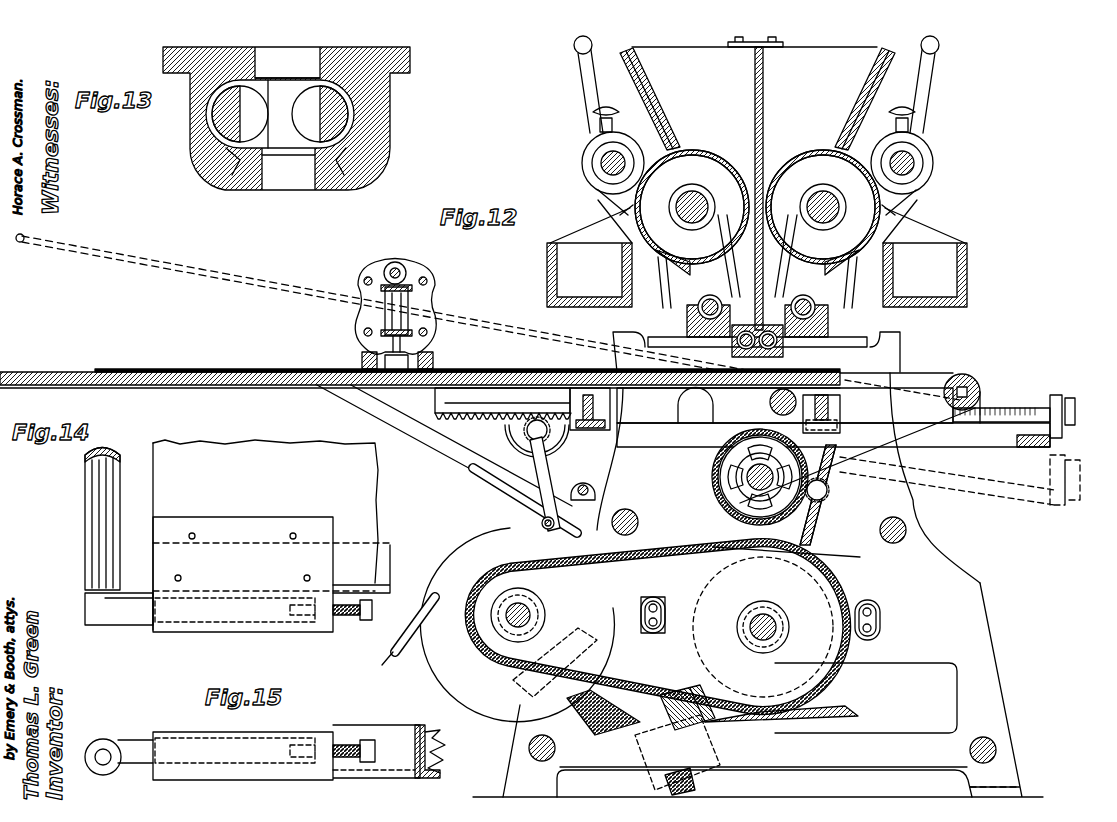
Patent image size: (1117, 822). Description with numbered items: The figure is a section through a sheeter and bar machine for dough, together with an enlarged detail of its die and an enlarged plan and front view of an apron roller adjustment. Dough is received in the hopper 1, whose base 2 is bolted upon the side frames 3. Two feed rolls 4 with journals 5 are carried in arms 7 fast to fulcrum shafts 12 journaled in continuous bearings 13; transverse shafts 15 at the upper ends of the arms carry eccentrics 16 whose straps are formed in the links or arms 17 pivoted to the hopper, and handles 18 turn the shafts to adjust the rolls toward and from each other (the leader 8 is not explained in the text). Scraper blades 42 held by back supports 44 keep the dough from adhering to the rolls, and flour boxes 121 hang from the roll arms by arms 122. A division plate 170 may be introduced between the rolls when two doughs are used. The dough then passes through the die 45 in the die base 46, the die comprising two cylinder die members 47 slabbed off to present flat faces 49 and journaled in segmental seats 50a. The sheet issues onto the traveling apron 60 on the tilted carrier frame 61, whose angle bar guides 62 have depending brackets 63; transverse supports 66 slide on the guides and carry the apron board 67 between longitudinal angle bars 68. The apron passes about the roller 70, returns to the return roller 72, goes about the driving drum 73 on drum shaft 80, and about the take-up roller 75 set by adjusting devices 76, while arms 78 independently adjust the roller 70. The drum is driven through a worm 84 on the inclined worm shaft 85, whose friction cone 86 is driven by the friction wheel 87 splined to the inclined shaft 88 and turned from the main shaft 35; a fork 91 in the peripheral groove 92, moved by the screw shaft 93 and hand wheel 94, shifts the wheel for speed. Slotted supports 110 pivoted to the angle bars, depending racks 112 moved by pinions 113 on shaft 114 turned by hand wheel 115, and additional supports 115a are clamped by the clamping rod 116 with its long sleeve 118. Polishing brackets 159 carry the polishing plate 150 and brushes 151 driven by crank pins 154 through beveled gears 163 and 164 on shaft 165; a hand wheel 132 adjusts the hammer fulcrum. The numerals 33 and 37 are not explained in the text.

In FIG. 12, the hopper 1 is at (694, 47).
In FIG. 12, the hopper base 2 is at (870, 342).
In FIG. 12, the side frames 3 is at (935, 555).
In FIG. 12, the feed rolls 4 is at (712, 170).
In FIG. 12, the journals 5 is at (692, 195).
In FIG. 12, the arms 7 is at (760, 270).
In FIG. 12, the lever arm 8 is at (756, 225).
In FIG. 12, the shafts 12 is at (665, 295).
In FIG. 12, the bearings 13 is at (687, 318).
In FIG. 12, the transverse shafts 15 is at (600, 163).
In FIG. 12, the eccentrics 16 is at (590, 178).
In FIG. 12, the links or arms 17 is at (658, 150).
In FIG. 12, the handles 18 is at (580, 70).
In FIG. 12, the large pulley 33 is at (763, 627).
In FIG. 12, the main shaft 35 is at (533, 614).
In FIG. 12, the toothed belt 37 is at (657, 627).
In FIG. 12, the scraper blades 42 is at (722, 300).
In FIG. 12, the back supports 44 is at (708, 255).
In FIG. 13, the die 45 is at (290, 50).
In FIG. 12, the die 45 is at (735, 343).
In FIG. 13, the die base 46 is at (215, 160).
In FIG. 12, the die base 46 is at (783, 345).
In FIG. 13, the cylinder die members 47 is at (235, 118).
In FIG. 13, the flat faces 49 is at (304, 135).
In FIG. 13, the segmental seats 50a is at (240, 165).
In FIG. 12, the traveling apron 60 is at (308, 388).
In FIG. 12, the tilted carrier frame 61 is at (1050, 440).
In FIG. 12, the angle bar members or guides 62 is at (625, 440).
In FIG. 12, the depending brackets 63 is at (725, 430).
In FIG. 12, the transverse apron board supports 66 is at (636, 420).
In FIG. 14, the apron board 67 is at (212, 455).
In FIG. 15, the apron board 67 is at (432, 745).
In FIG. 12, the apron board 67 is at (250, 292).
In FIG. 14, the longitudinal angle bars 68 is at (387, 545).
In FIG. 15, the longitudinal angle bars 68 is at (390, 735).
In FIG. 12, the longitudinal angle bars 68 is at (248, 372).
In FIG. 14, the roller 70 is at (120, 456).
In FIG. 12, the roller 70 is at (20, 244).
In FIG. 12, the return roller 72 is at (770, 402).
In FIG. 12, the apron driving drum 73 is at (715, 492).
In FIG. 12, the take-up roller 75 is at (972, 378).
In FIG. 12, the adjusting devices 76 is at (1000, 408).
In FIG. 14, the arms 78 is at (137, 625).
In FIG. 15, the arms 78 is at (135, 748).
In FIG. 12, the drum shaft 80 is at (733, 506).
In FIG. 12, the worm 84 is at (822, 503).
In FIG. 12, the inclined worm shaft 85 is at (850, 553).
In FIG. 12, the friction cone 86 is at (830, 710).
In FIG. 12, the friction wheel 87 is at (662, 712).
In FIG. 12, the inclined shaft 88 is at (625, 703).
In FIG. 12, the fork 91 is at (625, 740).
In FIG. 12, the peripheral groove 92 is at (652, 636).
In FIG. 12, the screw shaft 93 is at (522, 724).
In FIG. 12, the hand wheel 94 is at (415, 640).
In FIG. 12, the supports 110 is at (408, 420).
In FIG. 12, the depending racks 112 is at (490, 420).
In FIG. 12, the pinions 113 is at (525, 438).
In FIG. 12, the shaft 114 is at (570, 447).
In FIG. 12, the hand wheel 115 is at (478, 487).
In FIG. 12, the additional supports 115a is at (505, 505).
In FIG. 12, the clamping rod 116 is at (540, 522).
In FIG. 12, the long sleeve 118 is at (545, 530).
In FIG. 12, the flour boxes 121 is at (547, 262).
In FIG. 12, the arms 122 is at (605, 225).
In FIG. 12, the hand wheel 132 is at (597, 490).
In FIG. 12, the polishing plate 150 is at (368, 392).
In FIG. 12, the brushes 151 is at (362, 365).
In FIG. 12, the crank pins 154 is at (410, 360).
In FIG. 12, the brackets 159 is at (436, 300).
In FIG. 12, the beveled gears 163 is at (376, 276).
In FIG. 12, the beveled gears 164 is at (390, 266).
In FIG. 12, the shaft 165 is at (402, 266).
In FIG. 12, the division plate 170 is at (763, 78).